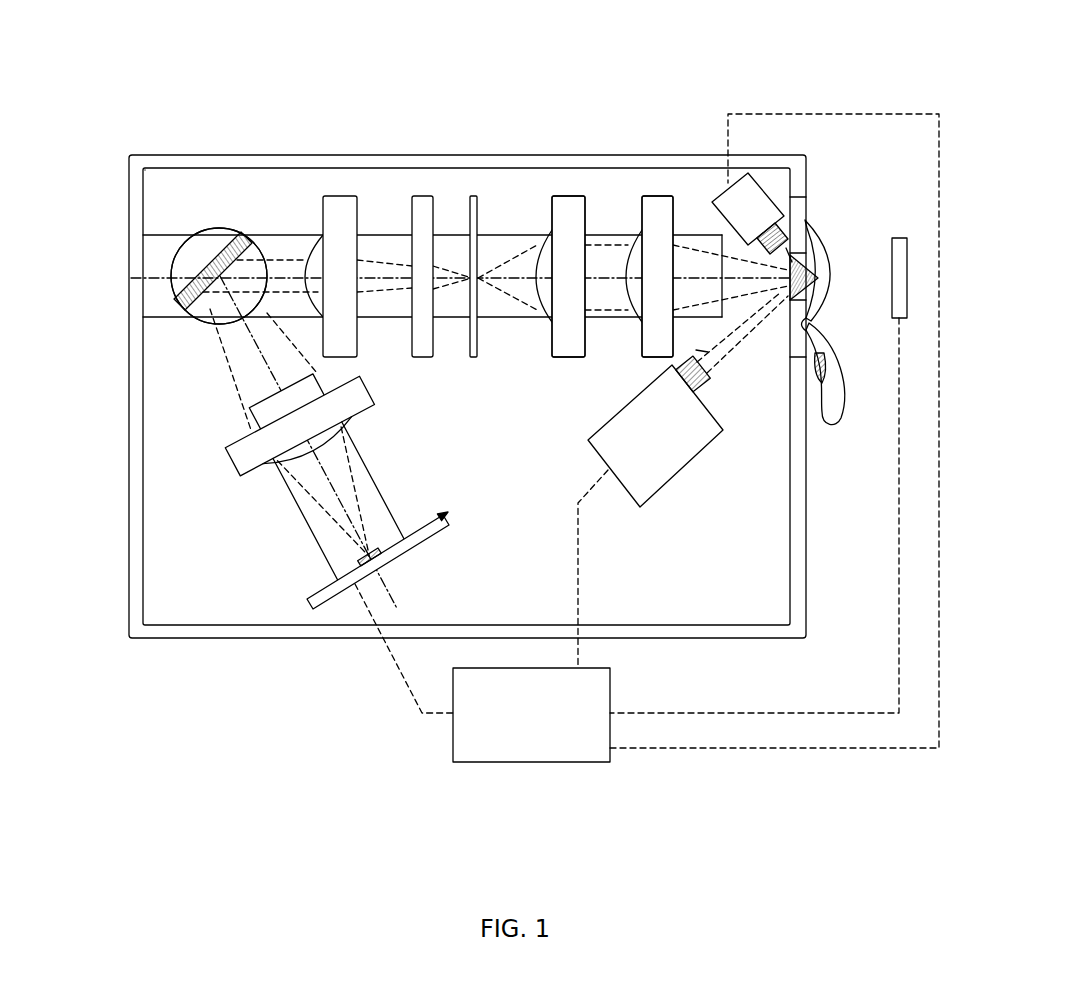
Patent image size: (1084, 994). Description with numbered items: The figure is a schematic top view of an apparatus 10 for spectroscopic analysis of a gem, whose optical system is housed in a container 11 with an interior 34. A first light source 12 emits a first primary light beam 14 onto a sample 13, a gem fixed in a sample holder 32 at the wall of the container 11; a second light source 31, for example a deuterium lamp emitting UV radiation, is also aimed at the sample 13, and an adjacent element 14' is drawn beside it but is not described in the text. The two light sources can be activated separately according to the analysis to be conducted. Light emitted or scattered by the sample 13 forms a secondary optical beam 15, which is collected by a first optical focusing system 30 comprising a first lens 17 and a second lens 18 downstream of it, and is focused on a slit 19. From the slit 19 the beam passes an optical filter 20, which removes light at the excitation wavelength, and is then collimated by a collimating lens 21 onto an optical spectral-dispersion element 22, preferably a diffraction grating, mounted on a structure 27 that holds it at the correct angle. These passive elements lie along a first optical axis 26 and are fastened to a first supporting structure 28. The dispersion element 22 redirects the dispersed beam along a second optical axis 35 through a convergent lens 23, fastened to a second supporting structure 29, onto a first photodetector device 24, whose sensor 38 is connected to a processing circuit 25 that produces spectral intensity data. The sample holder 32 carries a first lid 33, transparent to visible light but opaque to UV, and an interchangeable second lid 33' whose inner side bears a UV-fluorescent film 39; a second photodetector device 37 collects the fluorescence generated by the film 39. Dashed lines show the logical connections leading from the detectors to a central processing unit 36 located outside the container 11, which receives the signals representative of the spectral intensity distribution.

The apparatus 10 is at (237, 113).
The container 11 is at (178, 640).
The first light source 12 is at (641, 485).
The sample 13 is at (813, 285).
The first primary light beam 14 is at (732, 361).
The light source objective 14' is at (802, 215).
The secondary optical beam 15 is at (513, 257).
The first lens 17 is at (665, 197).
The second lens 18 is at (573, 197).
The slit 19 is at (473, 197).
The optical filter 20 is at (427, 197).
The collimating lens 21 is at (343, 200).
The optical spectral-dispersion element 22 is at (248, 265).
The convergent lens 23 is at (233, 458).
The first photodetector device 24 is at (446, 512).
The processing circuit 25 is at (317, 593).
The first optical axis 26 is at (157, 278).
The structure 27 is at (202, 238).
The first supporting structure 28 is at (285, 235).
The second supporting structure 29 is at (268, 398).
The first optical focusing system 30 is at (575, 62).
The second light source 31 is at (757, 206).
The sample holder 32 is at (784, 327).
The first lid 33 is at (840, 269).
The second lid 33' is at (841, 383).
The interior 34 is at (172, 577).
The second optical axis 35 is at (387, 587).
The central processing unit 36 is at (475, 762).
The second photodetector device 37 is at (899, 236).
The sensor 38 is at (381, 552).
The film 39 is at (823, 372).